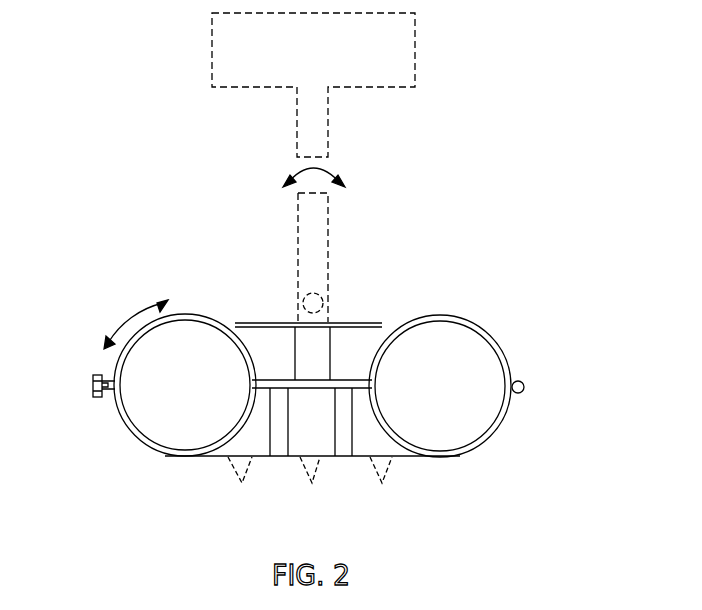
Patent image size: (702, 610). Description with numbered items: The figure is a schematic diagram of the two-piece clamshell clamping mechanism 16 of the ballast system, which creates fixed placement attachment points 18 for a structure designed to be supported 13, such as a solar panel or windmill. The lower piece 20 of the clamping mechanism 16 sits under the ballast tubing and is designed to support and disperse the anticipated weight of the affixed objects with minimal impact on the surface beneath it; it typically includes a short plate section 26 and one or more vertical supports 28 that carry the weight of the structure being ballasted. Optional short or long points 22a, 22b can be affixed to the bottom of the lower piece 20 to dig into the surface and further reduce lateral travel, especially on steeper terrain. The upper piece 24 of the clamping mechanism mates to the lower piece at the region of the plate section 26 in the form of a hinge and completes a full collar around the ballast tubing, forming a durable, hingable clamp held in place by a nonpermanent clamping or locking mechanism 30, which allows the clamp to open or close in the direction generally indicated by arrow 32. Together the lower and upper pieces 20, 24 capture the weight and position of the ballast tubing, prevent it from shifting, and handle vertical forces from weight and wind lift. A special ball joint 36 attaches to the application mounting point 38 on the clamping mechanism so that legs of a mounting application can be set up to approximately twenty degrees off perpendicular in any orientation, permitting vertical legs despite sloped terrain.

The structure designed to be supported 13 is at (305, 58).
The clamshell clamping mechanism 16 is at (181, 288).
The fixed placement attachment points 18 is at (330, 220).
The lower piece of the clamping mechanism 20 is at (120, 415).
The short or long points 22a is at (230, 468).
The short or long points 22b is at (392, 465).
The upper piece of the clamping mechanism 24 is at (116, 370).
The short plate section 26 is at (524, 386).
The vertical supports 28 is at (345, 400).
The nonpermanent clamping or locking mechanism 30 is at (92, 394).
The arrow 32 is at (130, 318).
The ball joint 36 is at (322, 292).
The application mounting point 38 is at (345, 337).